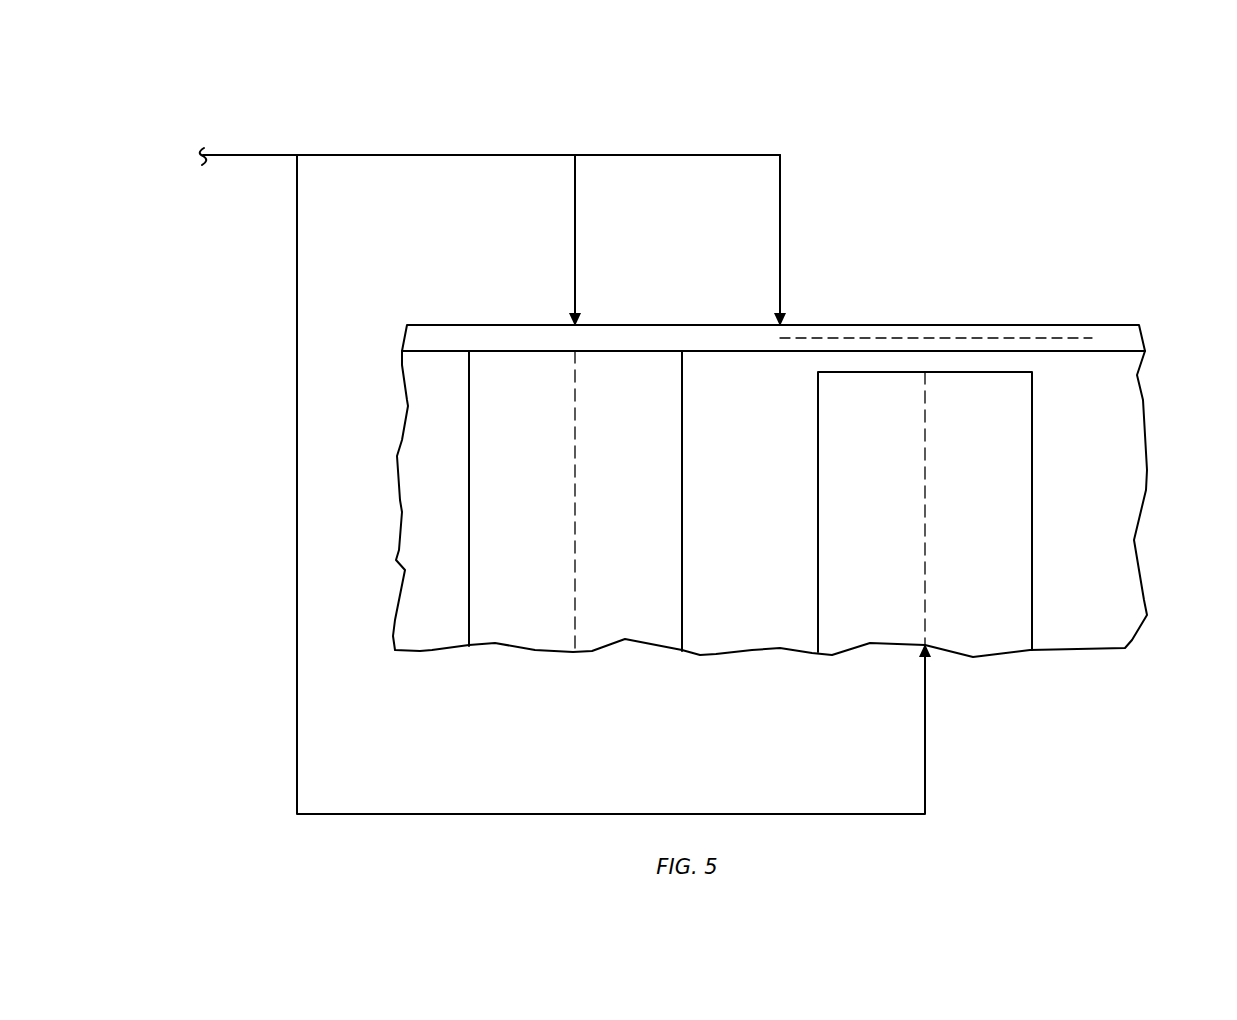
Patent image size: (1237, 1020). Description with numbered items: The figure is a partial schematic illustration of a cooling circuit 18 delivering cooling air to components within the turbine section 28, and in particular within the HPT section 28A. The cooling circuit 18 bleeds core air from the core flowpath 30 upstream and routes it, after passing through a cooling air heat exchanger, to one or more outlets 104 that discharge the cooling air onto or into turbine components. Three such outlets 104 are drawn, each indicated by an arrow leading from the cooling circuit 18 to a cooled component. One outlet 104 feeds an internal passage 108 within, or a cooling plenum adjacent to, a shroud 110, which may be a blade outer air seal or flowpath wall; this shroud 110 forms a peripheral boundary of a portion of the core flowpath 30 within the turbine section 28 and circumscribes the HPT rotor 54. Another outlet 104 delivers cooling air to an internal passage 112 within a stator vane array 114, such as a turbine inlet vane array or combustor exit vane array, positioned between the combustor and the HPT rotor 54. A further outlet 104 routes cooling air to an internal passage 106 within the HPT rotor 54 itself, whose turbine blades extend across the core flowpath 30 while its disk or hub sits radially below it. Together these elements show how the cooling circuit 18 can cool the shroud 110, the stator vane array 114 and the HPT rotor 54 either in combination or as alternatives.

The cooling circuit 18 is at (240, 154).
The outlet 104 is at (577, 323).
The turbine section 28 is at (800, 439).
The HPT section 28A is at (1026, 248).
The shroud 110 is at (1086, 324).
The internal passage 108 is at (930, 338).
The core flowpath 30 is at (1110, 488).
The internal passage 112 is at (578, 521).
The stator vane array 114 is at (692, 514).
The HPT rotor 54 is at (1032, 626).
The internal passage 106 is at (926, 533).